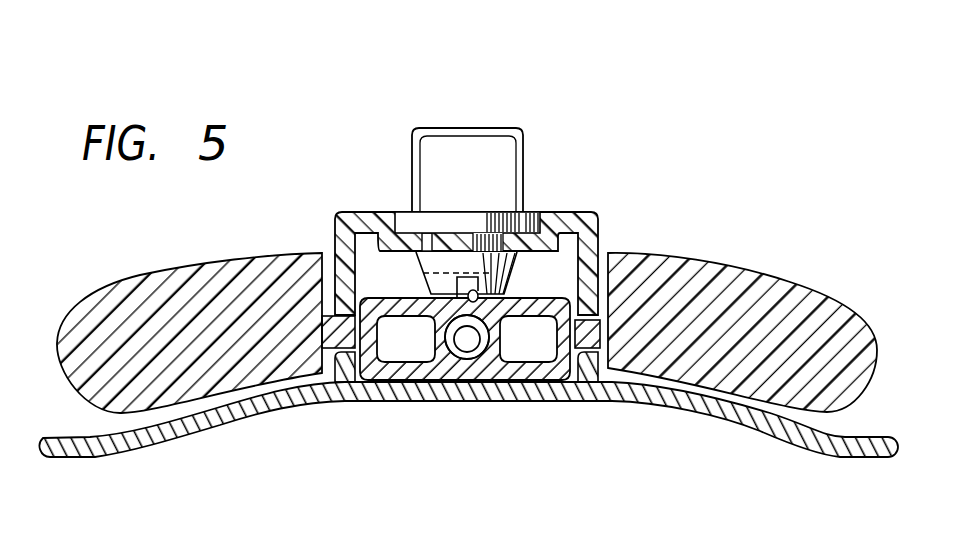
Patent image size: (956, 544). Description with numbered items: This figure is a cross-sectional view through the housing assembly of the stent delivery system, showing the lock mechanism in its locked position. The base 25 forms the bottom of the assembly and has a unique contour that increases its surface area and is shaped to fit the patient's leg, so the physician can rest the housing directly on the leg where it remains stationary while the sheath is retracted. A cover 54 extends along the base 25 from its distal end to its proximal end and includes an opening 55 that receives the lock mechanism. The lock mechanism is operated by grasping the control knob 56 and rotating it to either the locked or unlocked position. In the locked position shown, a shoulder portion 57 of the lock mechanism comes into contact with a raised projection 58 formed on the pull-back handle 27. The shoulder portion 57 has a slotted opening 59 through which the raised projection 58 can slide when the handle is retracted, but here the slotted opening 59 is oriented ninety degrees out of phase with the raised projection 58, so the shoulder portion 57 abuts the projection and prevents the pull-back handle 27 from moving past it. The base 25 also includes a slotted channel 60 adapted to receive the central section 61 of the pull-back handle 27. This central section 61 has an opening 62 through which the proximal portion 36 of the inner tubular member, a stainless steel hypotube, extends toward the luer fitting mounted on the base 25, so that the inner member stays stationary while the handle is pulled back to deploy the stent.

The base 25 is at (469, 428).
The pull-back handle 27 is at (757, 270).
The proximal portion 36 is at (458, 357).
The cover 54 is at (592, 214).
The opening 55 is at (433, 240).
The control knob 56 is at (466, 158).
The shoulder portion 57 is at (467, 262).
The raised projection 58 is at (457, 279).
The slotted opening 59 is at (480, 297).
The slotted channel 60 is at (517, 382).
The central section 61 is at (553, 367).
The opening 62 is at (478, 350).